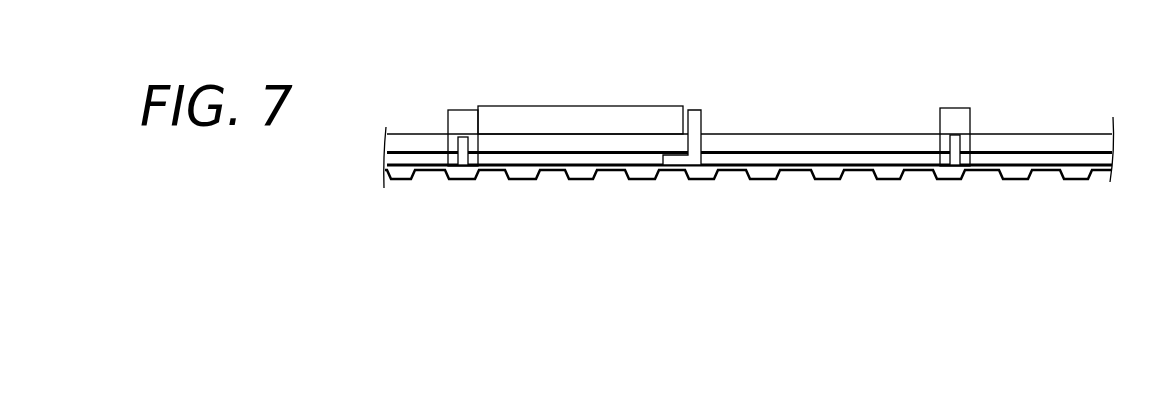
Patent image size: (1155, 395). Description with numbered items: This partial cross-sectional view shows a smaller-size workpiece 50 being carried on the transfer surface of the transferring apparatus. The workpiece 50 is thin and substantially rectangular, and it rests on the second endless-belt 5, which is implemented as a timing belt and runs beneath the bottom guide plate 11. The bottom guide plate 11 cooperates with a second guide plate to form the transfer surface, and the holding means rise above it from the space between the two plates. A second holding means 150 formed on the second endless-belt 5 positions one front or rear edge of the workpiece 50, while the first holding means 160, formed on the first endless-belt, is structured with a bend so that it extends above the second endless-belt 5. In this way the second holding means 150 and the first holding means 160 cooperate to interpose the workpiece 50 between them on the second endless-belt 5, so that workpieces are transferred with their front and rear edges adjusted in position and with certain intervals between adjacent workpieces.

The bottom guide plate 11 is at (848, 143).
The second endless-belt 5 is at (890, 172).
The workpiece 50 is at (602, 117).
The second holding means 150 is at (463, 117).
The first holding means 160 is at (694, 112).